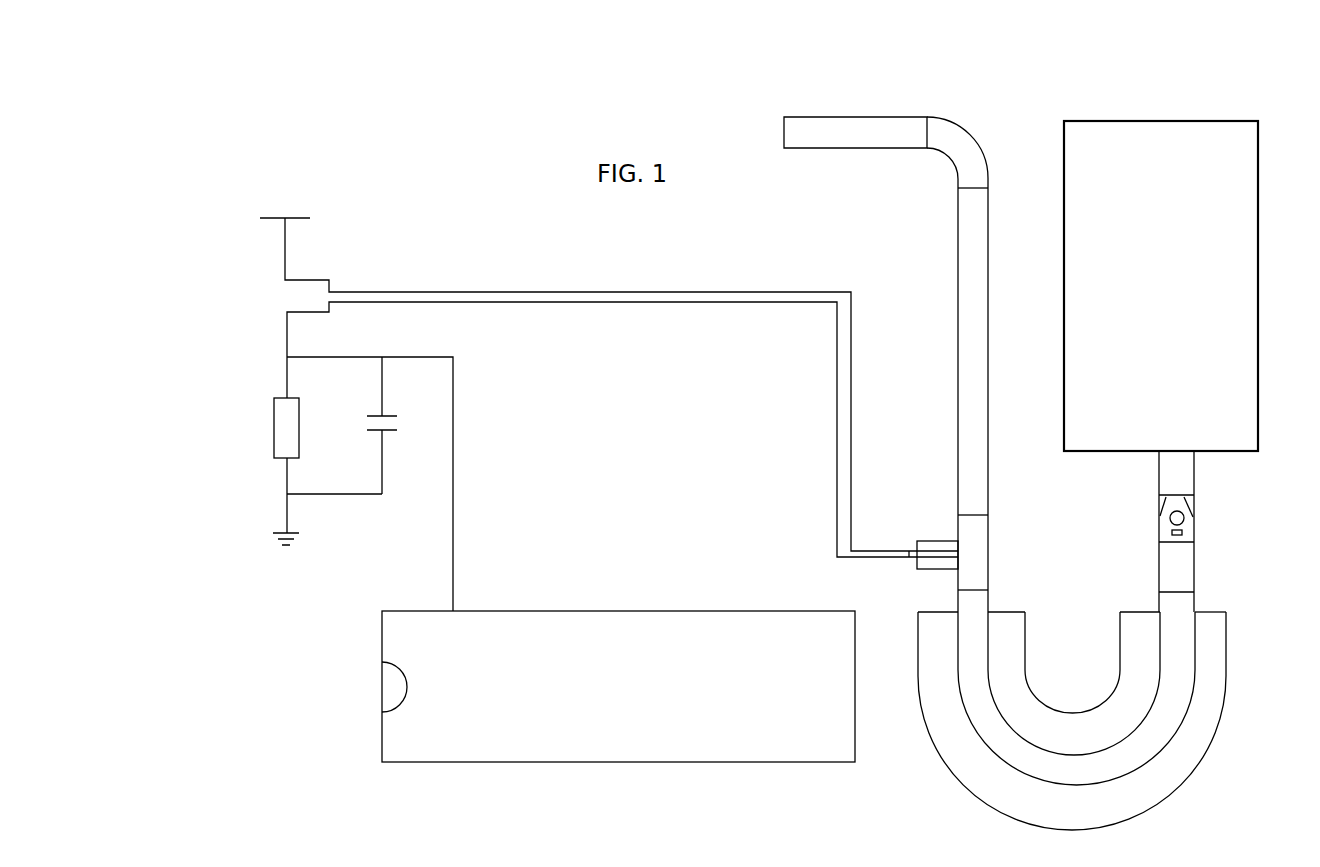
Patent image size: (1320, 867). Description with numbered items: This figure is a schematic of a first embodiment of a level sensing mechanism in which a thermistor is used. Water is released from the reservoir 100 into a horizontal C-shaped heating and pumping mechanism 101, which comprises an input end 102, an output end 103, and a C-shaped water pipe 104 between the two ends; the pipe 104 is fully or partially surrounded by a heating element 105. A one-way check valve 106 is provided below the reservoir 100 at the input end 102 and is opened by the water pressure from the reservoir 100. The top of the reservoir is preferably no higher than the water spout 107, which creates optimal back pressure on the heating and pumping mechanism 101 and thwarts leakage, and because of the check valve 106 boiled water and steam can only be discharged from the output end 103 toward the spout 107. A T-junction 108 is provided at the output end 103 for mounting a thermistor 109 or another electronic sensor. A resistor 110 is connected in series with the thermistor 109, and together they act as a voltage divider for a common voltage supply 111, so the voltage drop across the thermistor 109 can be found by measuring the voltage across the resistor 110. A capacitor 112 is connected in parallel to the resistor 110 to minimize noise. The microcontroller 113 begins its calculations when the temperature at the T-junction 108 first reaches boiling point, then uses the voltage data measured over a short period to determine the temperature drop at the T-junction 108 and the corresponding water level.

The reservoir 100 is at (1262, 352).
The heating and pumping mechanism 101 is at (1205, 792).
The input end 102 is at (1150, 532).
The output end 103 is at (1005, 497).
The C-shaped water pipe 104 is at (1003, 745).
The heating element 105 is at (1215, 705).
The one-way check valve 106 is at (1197, 505).
The water spout 107 is at (863, 137).
The T-junction 108 is at (967, 575).
The thermistor 109 is at (912, 570).
The resistor 110 is at (270, 440).
The voltage supply 111 is at (293, 213).
The capacitor 112 is at (393, 443).
The microcontroller 113 is at (600, 611).